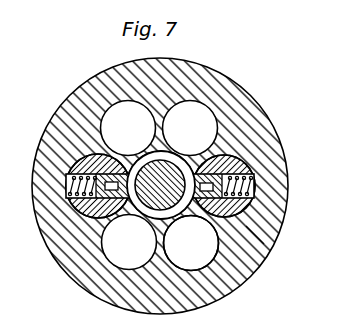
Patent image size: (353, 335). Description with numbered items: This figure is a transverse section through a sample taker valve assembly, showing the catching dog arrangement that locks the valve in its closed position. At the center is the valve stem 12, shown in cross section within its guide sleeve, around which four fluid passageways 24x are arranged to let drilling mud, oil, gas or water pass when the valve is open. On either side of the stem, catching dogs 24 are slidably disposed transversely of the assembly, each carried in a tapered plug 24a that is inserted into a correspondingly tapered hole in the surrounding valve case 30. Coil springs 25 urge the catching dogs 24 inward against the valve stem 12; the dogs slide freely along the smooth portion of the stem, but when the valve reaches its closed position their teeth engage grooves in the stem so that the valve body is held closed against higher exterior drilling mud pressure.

The valve stem 12 is at (152, 180).
The catching dog 24 is at (232, 159).
The tapered plug 24a is at (250, 229).
The fluid passageway 24x is at (197, 253).
The coil spring 25 is at (252, 178).
The valve case 30 is at (258, 215).